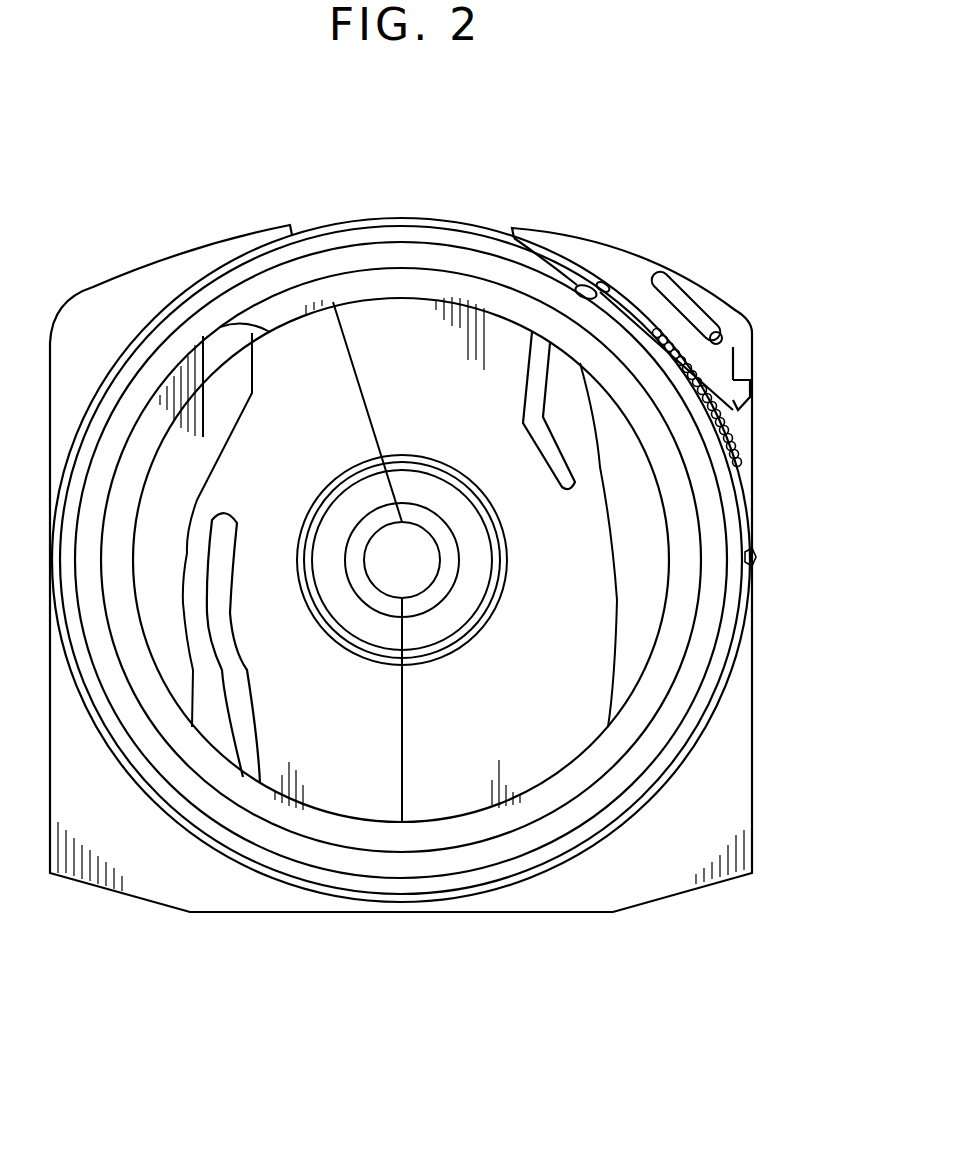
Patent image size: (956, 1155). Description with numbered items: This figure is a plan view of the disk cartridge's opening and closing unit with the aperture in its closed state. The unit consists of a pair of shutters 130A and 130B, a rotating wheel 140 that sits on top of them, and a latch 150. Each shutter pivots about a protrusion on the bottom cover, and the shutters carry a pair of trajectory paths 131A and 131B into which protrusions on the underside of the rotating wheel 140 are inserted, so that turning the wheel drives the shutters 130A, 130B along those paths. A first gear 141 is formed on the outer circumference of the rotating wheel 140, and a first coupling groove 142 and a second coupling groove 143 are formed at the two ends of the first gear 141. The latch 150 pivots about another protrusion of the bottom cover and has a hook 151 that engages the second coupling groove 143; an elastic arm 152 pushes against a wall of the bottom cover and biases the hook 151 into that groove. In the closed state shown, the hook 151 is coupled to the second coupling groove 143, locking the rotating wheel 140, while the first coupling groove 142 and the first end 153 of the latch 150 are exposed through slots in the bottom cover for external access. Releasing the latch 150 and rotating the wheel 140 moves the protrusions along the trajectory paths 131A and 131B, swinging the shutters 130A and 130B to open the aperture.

The rotating wheel 140 is at (345, 232).
The first gear 141 is at (745, 460).
The first coupling groove 142 is at (756, 557).
The second coupling groove 143 is at (583, 288).
The latch 150 is at (735, 310).
The hook 151 is at (606, 284).
The elastic arm 152 is at (665, 280).
The first end 153 is at (753, 398).
The shutter 130A is at (455, 795).
The shutter 130B is at (350, 795).
The trajectory path 131A is at (565, 495).
The trajectory path 131B is at (243, 713).